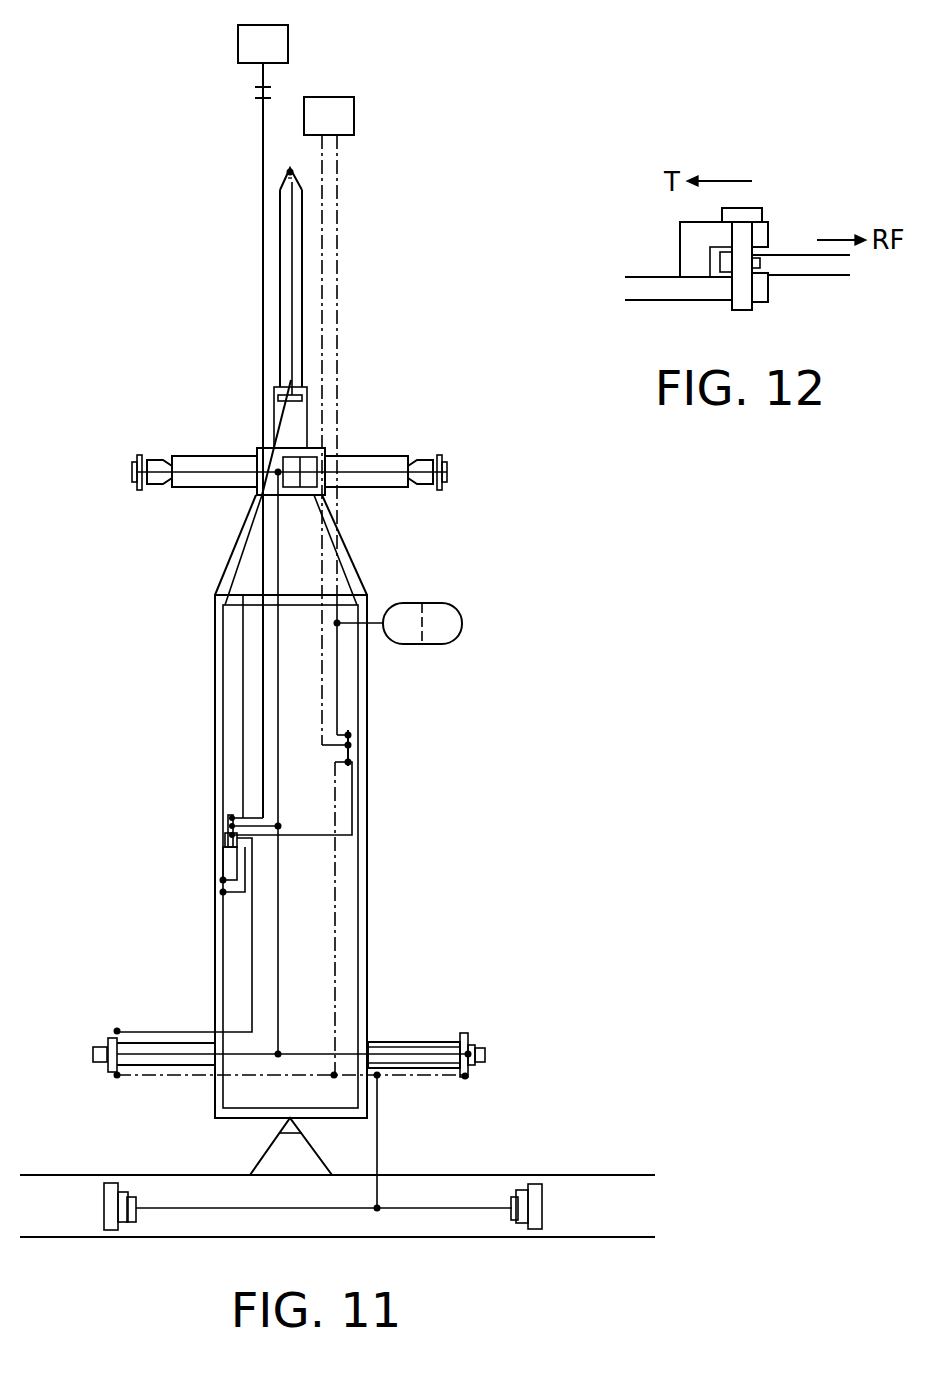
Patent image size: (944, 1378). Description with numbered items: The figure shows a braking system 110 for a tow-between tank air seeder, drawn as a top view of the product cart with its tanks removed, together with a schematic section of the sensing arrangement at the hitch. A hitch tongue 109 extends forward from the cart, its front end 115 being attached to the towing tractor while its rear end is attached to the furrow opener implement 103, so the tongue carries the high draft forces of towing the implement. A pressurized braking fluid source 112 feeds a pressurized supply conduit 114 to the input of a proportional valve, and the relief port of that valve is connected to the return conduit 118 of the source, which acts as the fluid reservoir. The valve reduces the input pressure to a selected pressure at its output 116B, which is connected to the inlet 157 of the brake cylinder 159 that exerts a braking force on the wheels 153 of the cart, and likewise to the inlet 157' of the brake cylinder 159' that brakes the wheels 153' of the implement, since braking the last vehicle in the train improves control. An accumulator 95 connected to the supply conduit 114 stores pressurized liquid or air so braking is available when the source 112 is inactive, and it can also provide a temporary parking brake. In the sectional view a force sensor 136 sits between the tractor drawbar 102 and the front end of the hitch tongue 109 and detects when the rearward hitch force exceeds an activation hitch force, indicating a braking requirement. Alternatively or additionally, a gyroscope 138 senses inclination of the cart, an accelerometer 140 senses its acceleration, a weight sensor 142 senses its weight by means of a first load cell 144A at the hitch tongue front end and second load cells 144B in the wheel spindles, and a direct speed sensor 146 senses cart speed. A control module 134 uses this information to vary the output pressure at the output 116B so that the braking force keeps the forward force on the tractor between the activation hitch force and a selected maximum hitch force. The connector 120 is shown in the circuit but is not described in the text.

In FIG. 11, the braking system 110 is at (465, 155).
In FIG. 11, the pressurized braking fluid source 112 is at (345, 97).
In FIG. 11, the pressurized supply conduit 114 is at (338, 245).
In FIG. 11, the return conduit 118 is at (322, 314).
In FIG. 11, the hitch tongue 109 is at (280, 263).
In FIG. 12, the hitch tongue 109 is at (835, 277).
In FIG. 11, the front end 115 is at (300, 185).
In FIG. 12, the front end 115 is at (783, 253).
In FIG. 11, the first load cell 144A is at (289, 171).
In FIG. 11, the force sensor 136 is at (300, 185).
In FIG. 12, the force sensor 136 is at (762, 266).
In FIG. 11, the second load cells 144B is at (136, 463).
In FIG. 11, the accumulator 95 is at (458, 603).
In FIG. 11, the connector 120 is at (351, 732).
In FIG. 11, the output 116B is at (351, 770).
In FIG. 11, the weight sensor 142 is at (242, 816).
In FIG. 11, the control module 134 is at (228, 826).
In FIG. 11, the accelerometer 140 is at (223, 880).
In FIG. 11, the gyroscope 138 is at (223, 893).
In FIG. 11, the direct speed sensor 146 is at (117, 1030).
In FIG. 11, the wheels 153 is at (67, 1037).
In FIG. 11, the brake cylinder 159 is at (507, 1034).
In FIG. 11, the inlet 157 is at (420, 1142).
In FIG. 11, the furrow opener implement 103 is at (590, 1175).
In FIG. 11, the inlet 157' is at (324, 1239).
In FIG. 11, the brake cylinder 159' is at (505, 1238).
In FIG. 11, the wheels 153' is at (581, 1229).
In FIG. 12, the drawbar 102 is at (677, 302).